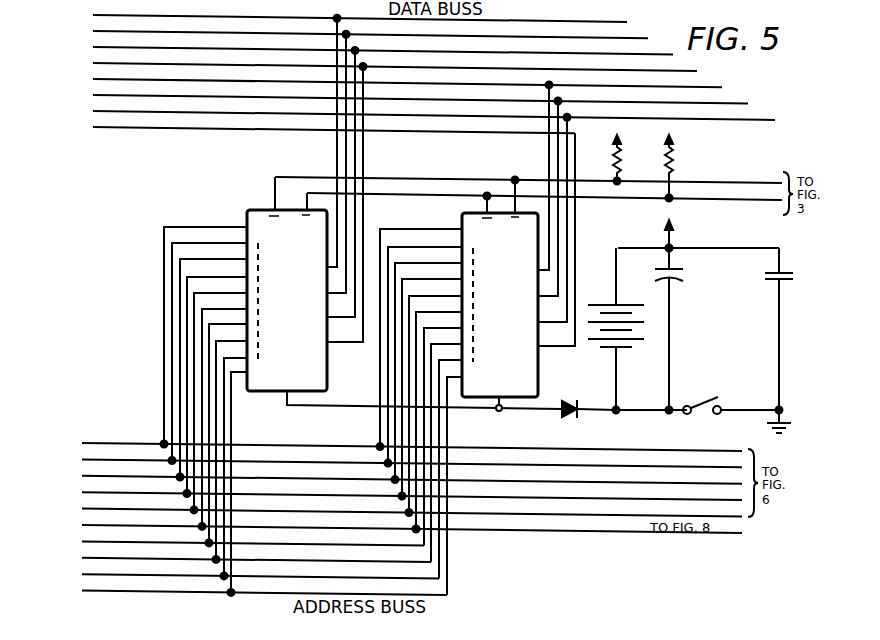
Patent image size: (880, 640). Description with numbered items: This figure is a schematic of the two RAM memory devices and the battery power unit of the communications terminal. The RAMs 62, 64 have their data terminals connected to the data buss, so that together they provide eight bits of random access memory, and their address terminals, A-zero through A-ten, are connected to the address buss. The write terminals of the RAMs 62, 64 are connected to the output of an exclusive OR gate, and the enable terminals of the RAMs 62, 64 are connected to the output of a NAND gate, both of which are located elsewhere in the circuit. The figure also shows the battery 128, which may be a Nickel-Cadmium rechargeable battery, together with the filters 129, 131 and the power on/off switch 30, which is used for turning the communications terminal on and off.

The RAM 62 is at (293, 359).
The RAM 64 is at (503, 360).
The battery 128 is at (599, 296).
The filter 129 is at (681, 277).
The filter 131 is at (787, 280).
The power on/off switch 30 is at (702, 392).